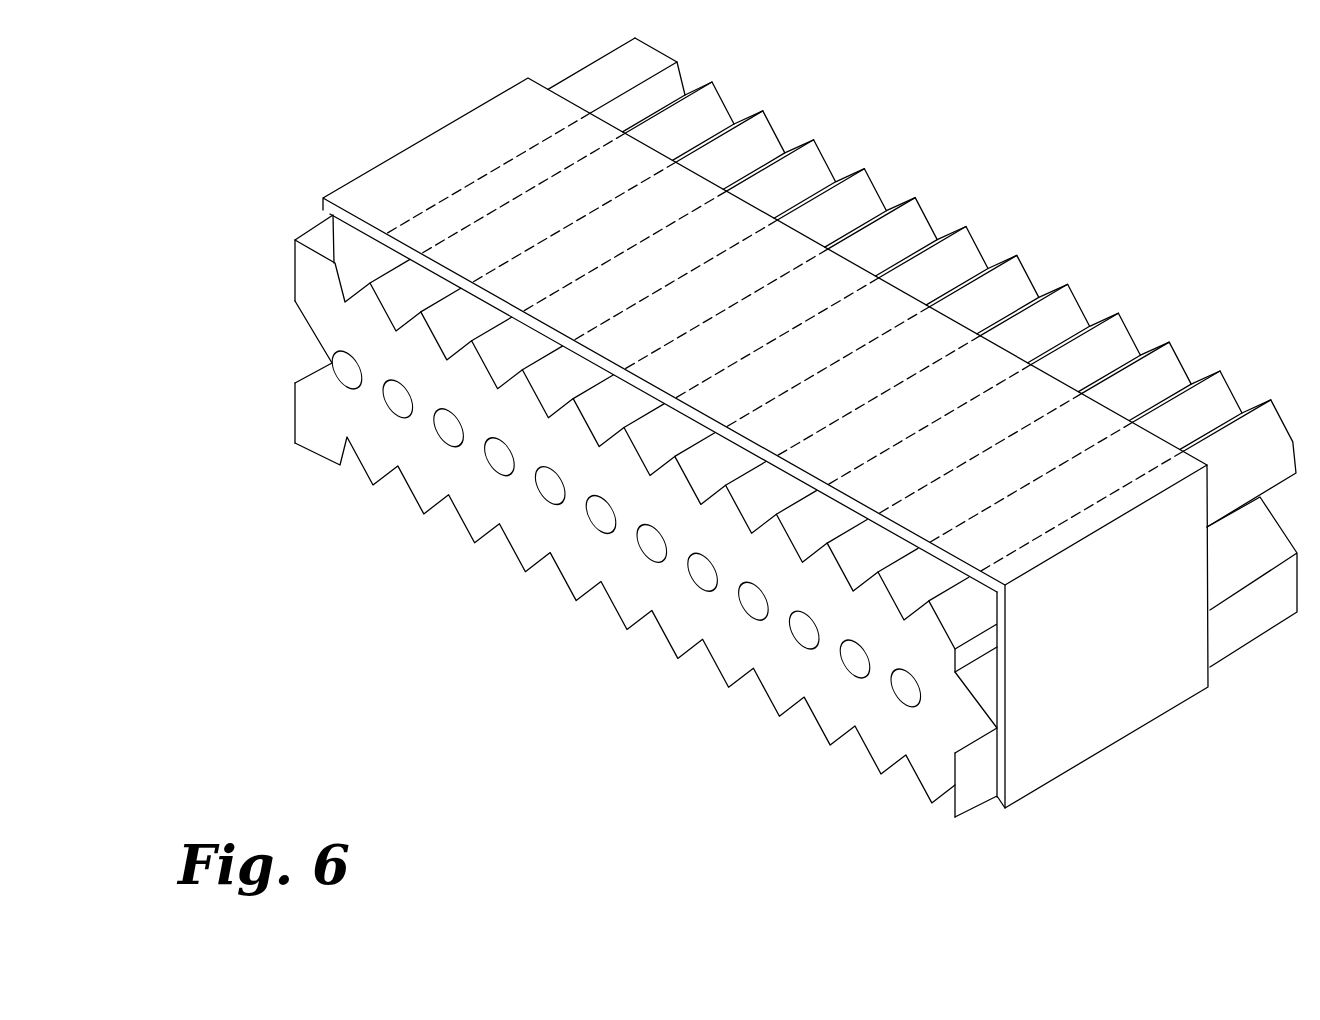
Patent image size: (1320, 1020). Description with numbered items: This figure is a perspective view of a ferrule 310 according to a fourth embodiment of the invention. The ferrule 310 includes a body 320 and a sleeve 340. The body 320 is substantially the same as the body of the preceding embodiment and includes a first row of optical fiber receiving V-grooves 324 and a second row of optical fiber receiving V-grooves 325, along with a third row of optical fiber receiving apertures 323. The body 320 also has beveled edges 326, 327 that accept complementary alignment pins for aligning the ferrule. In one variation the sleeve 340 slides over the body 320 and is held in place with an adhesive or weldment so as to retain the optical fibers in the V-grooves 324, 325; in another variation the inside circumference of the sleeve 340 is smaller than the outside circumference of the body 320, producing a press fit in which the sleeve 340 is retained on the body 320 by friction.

The ferrule 310 is at (658, 48).
The body 320 is at (298, 437).
The optical fiber receiving apertures 323 is at (903, 690).
The optical fiber receiving V-grooves 324 is at (877, 183).
The optical fiber receiving V-grooves 325 is at (600, 588).
The beveled edge 326 is at (960, 705).
The beveled edge 327 is at (318, 342).
The sleeve 340 is at (1143, 703).